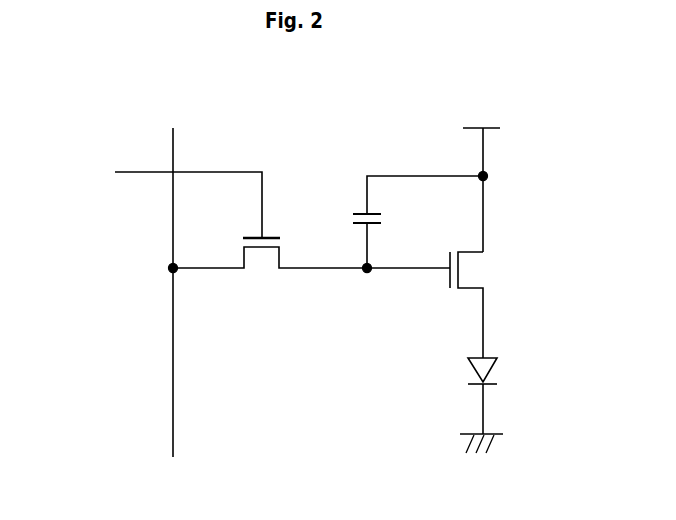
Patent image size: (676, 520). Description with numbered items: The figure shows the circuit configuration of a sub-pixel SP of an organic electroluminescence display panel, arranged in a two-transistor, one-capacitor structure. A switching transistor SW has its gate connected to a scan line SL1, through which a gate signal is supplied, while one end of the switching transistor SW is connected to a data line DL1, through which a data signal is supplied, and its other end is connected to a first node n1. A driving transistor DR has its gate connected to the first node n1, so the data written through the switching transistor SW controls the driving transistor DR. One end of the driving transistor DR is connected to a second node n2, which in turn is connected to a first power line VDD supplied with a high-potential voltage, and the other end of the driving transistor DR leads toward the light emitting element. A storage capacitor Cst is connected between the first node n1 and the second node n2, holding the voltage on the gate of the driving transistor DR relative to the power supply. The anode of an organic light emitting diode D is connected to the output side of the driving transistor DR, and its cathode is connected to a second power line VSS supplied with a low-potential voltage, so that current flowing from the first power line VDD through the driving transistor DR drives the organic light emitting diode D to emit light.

The sub-pixel SP is at (107, 114).
The data line DL1 is at (172, 277).
The scan line SL1 is at (170, 198).
The switching transistor SW is at (270, 267).
The first node n1 is at (310, 283).
The second node n2 is at (500, 207).
The storage capacitor Cst is at (418, 222).
The first power line VDD is at (481, 139).
The driving transistor DR is at (476, 305).
The organic light emitting diode D is at (490, 396).
The second power line VSS is at (481, 459).